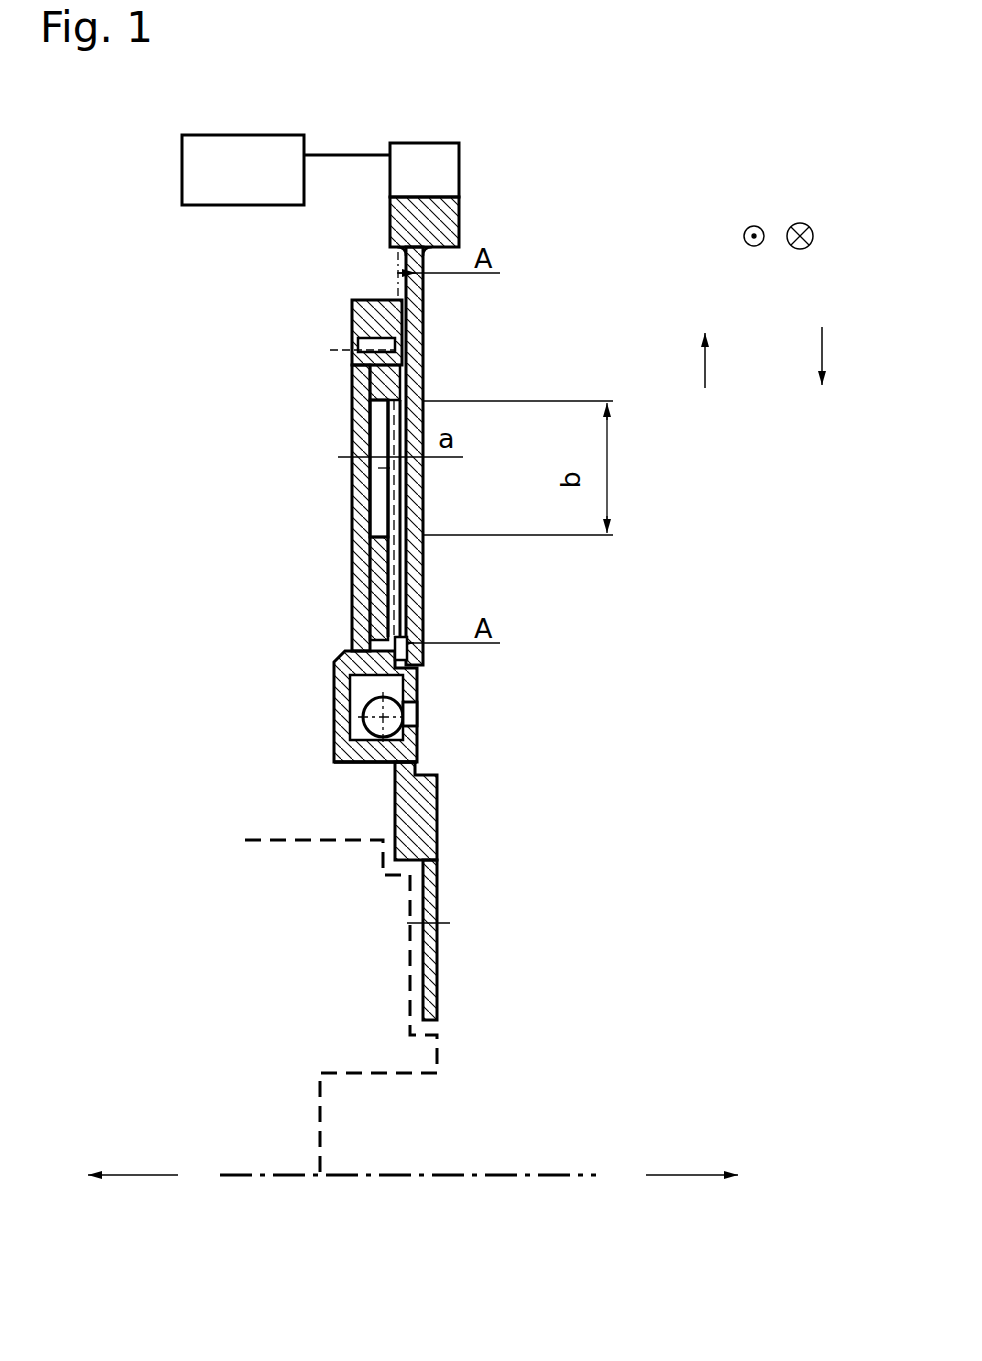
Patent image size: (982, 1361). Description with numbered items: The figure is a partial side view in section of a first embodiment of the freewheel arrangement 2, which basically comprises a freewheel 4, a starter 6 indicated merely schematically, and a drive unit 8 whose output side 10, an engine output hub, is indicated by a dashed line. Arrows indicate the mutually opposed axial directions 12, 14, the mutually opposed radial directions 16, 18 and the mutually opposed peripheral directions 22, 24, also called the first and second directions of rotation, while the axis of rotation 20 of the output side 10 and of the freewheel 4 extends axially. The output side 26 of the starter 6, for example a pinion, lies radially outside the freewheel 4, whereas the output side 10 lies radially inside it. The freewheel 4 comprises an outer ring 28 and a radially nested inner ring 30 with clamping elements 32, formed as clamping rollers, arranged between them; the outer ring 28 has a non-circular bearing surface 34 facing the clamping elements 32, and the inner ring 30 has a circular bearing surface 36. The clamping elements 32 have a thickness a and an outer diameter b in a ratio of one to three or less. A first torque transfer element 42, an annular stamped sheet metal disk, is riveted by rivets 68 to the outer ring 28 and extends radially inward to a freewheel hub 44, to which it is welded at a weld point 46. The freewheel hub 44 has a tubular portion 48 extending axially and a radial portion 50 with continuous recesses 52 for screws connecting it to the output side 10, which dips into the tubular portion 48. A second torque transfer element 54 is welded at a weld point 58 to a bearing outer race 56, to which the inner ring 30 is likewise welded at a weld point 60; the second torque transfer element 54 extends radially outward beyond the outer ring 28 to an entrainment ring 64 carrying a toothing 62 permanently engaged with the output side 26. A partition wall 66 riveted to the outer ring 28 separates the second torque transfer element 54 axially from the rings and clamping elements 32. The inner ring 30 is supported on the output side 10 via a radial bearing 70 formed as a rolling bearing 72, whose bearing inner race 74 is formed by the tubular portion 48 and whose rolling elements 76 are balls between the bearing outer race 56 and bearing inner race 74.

The freewheel arrangement 2 is at (771, 137).
The freewheel 4 is at (426, 501).
The starter 6 is at (254, 190).
The drive unit 8 is at (133, 943).
The output side 10 is at (280, 840).
The axial direction 12 is at (681, 1175).
The axial direction 14 is at (148, 1175).
The radial direction 16 is at (705, 372).
The radial direction 18 is at (822, 345).
The axis of rotation 20 is at (475, 1175).
The first direction of rotation 22 is at (745, 228).
The second direction of rotation 24 is at (809, 225).
The output side 26 is at (346, 155).
The outer ring 28 is at (385, 312).
The inner ring 30 is at (383, 597).
The clamping elements 32 is at (378, 450).
The bearing surface of the outer ring 34 is at (383, 442).
The bearing surface of the inner ring 36 is at (383, 498).
The first torque transfer element 42 is at (358, 483).
The freewheel hub 44 is at (439, 800).
The weld point 46 is at (346, 735).
The tubular portion 48 is at (403, 745).
The radial portion 50 is at (423, 838).
The recesses 52 is at (430, 908).
The second torque transfer element 54 is at (414, 355).
The bearing outer race 56 is at (403, 697).
The weld point 58 is at (420, 670).
The weld point 60 is at (370, 660).
The toothing 62 is at (464, 156).
The entrainment ring 64 is at (440, 222).
The partition wall 66 is at (407, 387).
The rivets 68 is at (384, 345).
The radial bearing 70 is at (426, 705).
The rolling bearing 72 is at (500, 701).
The bearing inner race 74 is at (545, 745).
The rolling element 76 is at (345, 690).